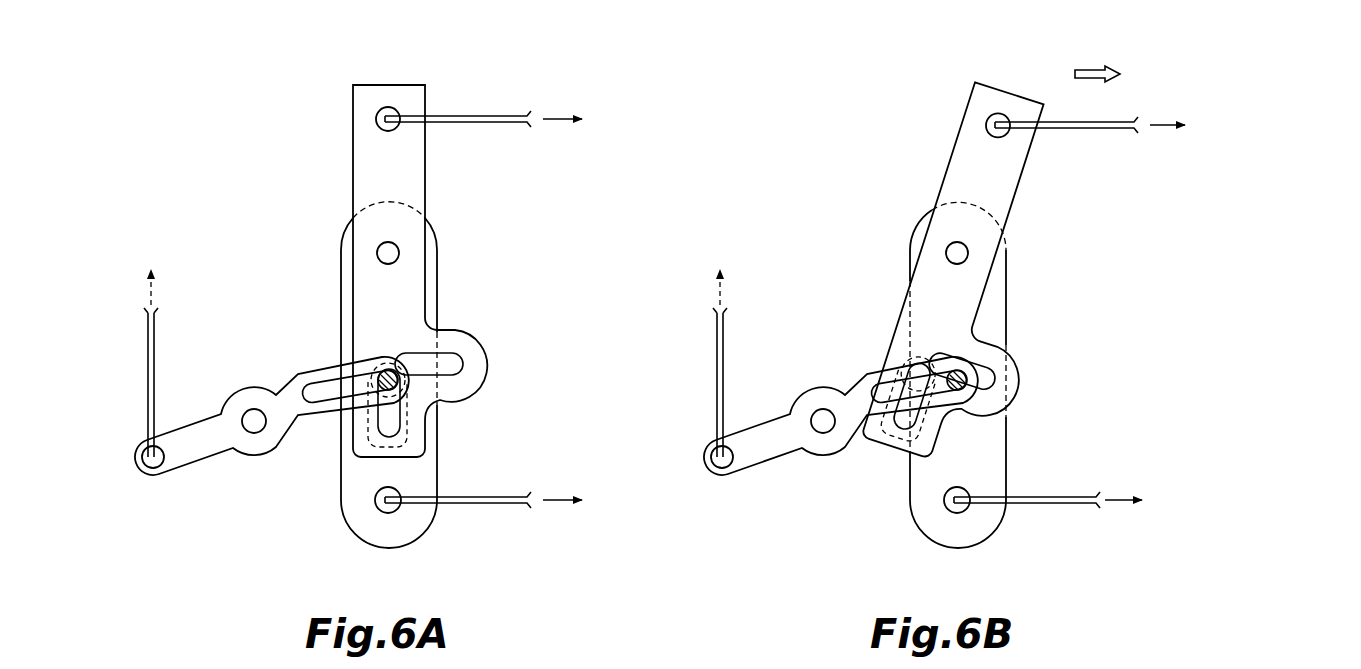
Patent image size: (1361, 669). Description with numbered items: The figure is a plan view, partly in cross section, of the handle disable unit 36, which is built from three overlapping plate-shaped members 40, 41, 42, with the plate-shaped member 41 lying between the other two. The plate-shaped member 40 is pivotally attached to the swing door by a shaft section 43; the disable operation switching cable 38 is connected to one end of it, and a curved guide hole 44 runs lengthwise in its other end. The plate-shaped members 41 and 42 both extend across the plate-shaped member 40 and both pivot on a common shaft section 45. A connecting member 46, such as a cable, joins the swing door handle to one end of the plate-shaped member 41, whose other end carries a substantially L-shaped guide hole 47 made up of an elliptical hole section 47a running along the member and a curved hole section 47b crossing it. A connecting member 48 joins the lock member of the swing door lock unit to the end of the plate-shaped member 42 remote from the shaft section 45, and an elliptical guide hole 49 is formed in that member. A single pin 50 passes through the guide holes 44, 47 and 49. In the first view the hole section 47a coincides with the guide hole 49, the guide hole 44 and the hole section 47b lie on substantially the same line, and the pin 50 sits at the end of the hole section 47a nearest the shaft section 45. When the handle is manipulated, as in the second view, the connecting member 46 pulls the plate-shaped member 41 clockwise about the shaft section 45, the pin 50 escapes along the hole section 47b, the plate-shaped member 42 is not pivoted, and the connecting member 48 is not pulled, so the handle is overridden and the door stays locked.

In FIG. 6A, the handle disable unit 36 is at (282, 102).
In FIG. 6B, the handle disable unit 36 is at (992, 304).
In FIG. 6A, the disable operation switching cable 38 is at (147, 356).
In FIG. 6B, the disable operation switching cable 38 is at (721, 328).
In FIG. 6A, the plate-shaped member 40 is at (205, 425).
In FIG. 6B, the plate-shaped member 40 is at (841, 396).
In FIG. 6A, the plate-shaped member 41 is at (378, 170).
In FIG. 6B, the plate-shaped member 41 is at (1090, 279).
In FIG. 6A, the plate-shaped member 42 is at (437, 282).
In FIG. 6B, the plate-shaped member 42 is at (1059, 394).
In FIG. 6A, the shaft section 43 is at (260, 428).
In FIG. 6B, the shaft section 43 is at (840, 456).
In FIG. 6A, the guide hole 44 is at (325, 395).
In FIG. 6B, the guide hole 44 is at (909, 346).
In FIG. 6A, the shaft section 45 is at (390, 256).
In FIG. 6B, the shaft section 45 is at (1012, 224).
In FIG. 6A, the connecting member 46 is at (480, 112).
In FIG. 6B, the connecting member 46 is at (1155, 155).
In FIG. 6A, the guide hole 47 is at (484, 397).
In FIG. 6B, the guide hole 47 is at (1025, 396).
In FIG. 6A, the hole section 47a is at (390, 420).
In FIG. 6B, the hole section 47a is at (989, 401).
In FIG. 6A, the hole section 47b is at (455, 367).
In FIG. 6B, the hole section 47b is at (1027, 371).
In FIG. 6A, the connecting member 48 is at (477, 506).
In FIG. 6B, the connecting member 48 is at (1091, 537).
In FIG. 6A, the guide hole 49 is at (400, 448).
In FIG. 6B, the guide hole 49 is at (985, 417).
In FIG. 6A, the pin 50 is at (405, 362).
In FIG. 6B, the pin 50 is at (1034, 342).